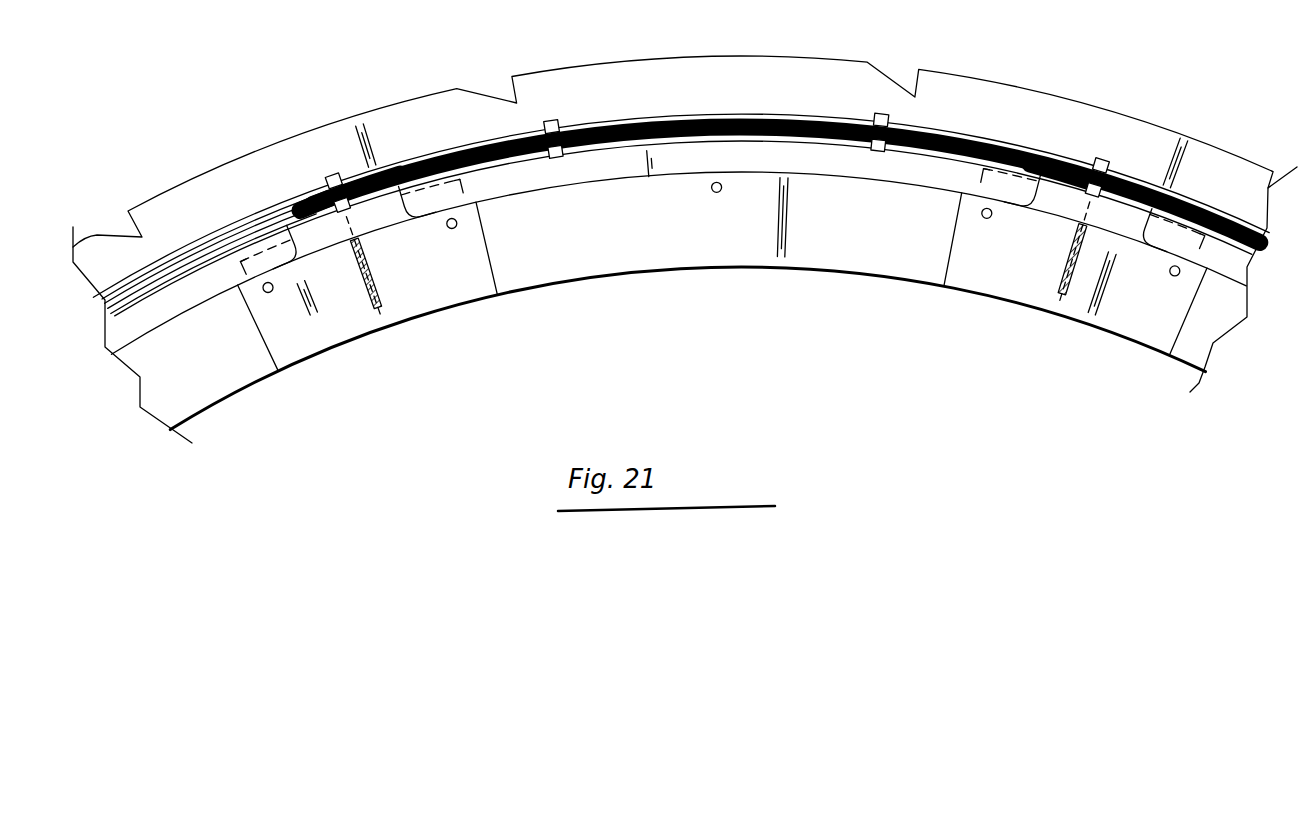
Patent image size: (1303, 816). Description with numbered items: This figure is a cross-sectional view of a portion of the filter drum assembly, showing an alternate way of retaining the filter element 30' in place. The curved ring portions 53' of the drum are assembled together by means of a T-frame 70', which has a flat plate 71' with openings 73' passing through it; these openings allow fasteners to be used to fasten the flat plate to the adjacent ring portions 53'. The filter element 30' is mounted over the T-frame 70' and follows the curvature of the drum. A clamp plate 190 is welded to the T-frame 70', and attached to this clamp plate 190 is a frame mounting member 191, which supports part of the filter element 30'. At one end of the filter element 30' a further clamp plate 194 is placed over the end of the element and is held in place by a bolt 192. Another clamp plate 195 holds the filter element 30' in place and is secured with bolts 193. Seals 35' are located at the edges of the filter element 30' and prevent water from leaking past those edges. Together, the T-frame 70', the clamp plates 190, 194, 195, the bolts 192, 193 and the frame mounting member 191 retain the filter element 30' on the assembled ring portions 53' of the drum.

The filter element 30' is at (687, 159).
The seals 35' is at (703, 153).
The ring portions 53' is at (685, 147).
The T-frame 70' is at (688, 304).
The flat plate 71' is at (722, 257).
The openings 73' is at (680, 271).
The clamp plate 190 is at (717, 259).
The frame mounting member 191 is at (570, 185).
The bolt 192 is at (330, 177).
The bolts 193 is at (560, 123).
The clamp plate 194 is at (322, 202).
The clamp plate 195 is at (697, 117).